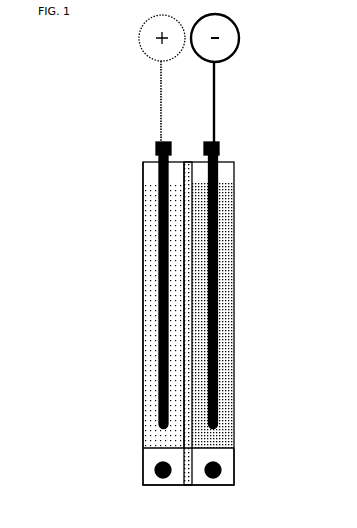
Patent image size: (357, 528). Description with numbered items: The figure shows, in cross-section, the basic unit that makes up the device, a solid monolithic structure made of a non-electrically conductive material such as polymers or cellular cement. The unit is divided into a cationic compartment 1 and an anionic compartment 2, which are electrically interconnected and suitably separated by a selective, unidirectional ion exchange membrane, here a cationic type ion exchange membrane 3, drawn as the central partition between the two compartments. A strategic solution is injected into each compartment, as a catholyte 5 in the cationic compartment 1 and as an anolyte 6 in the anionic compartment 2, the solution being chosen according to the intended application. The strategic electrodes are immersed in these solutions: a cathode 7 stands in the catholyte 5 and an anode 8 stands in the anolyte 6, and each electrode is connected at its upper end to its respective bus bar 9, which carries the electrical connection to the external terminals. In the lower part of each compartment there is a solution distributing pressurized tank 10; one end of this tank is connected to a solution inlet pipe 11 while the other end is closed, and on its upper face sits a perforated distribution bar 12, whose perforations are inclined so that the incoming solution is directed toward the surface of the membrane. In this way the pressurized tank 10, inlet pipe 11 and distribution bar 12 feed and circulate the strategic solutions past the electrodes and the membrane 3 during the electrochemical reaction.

The cationic compartment 1 is at (234, 162).
The anionic compartment 2 is at (147, 163).
The cationic type ion exchange membrane 3 is at (190, 277).
The catholyte 5 is at (225, 195).
The anolyte 6 is at (151, 200).
The cathode 7 is at (215, 230).
The anode 8 is at (160, 234).
The bus bar 9 is at (157, 145).
The solution distributing pressurized tank 10 is at (155, 457).
The solution inlet pipe 11 is at (155, 470).
The perforated distribution bar 12 is at (155, 447).